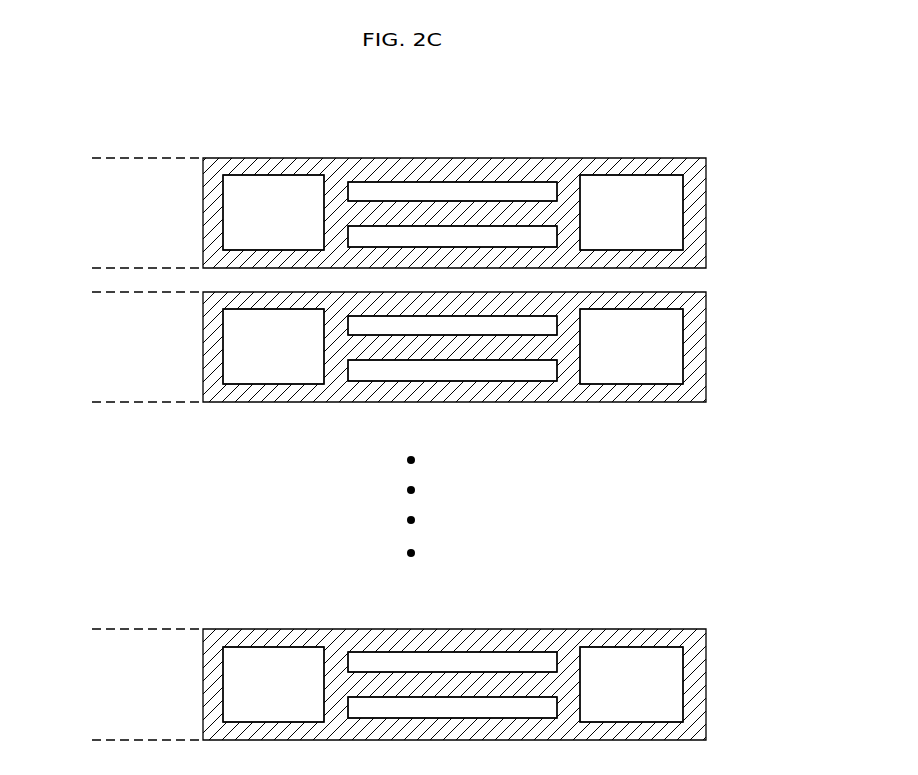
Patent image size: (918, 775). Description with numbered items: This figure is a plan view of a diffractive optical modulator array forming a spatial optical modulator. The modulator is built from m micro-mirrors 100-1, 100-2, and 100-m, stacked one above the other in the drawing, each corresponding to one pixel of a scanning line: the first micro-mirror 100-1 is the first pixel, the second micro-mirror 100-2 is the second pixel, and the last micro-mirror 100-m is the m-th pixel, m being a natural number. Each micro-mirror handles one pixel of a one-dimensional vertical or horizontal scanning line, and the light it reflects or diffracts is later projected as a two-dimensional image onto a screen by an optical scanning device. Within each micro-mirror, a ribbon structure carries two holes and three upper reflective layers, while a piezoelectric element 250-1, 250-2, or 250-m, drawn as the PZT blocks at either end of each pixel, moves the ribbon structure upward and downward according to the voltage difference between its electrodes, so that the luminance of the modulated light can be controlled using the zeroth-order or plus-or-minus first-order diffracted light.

The micro-mirror 100-1 is at (424, 170).
The micro-mirror 100-2 is at (424, 396).
The micro-mirror 100-m is at (423, 641).
The piezoelectric element 250-1 is at (673, 217).
The piezoelectric element 250-2 is at (673, 347).
The piezoelectric element 250-m is at (670, 684).